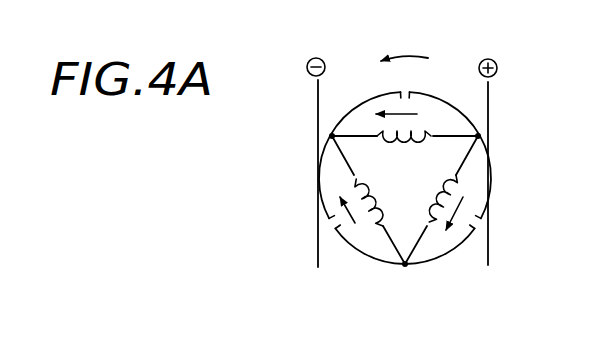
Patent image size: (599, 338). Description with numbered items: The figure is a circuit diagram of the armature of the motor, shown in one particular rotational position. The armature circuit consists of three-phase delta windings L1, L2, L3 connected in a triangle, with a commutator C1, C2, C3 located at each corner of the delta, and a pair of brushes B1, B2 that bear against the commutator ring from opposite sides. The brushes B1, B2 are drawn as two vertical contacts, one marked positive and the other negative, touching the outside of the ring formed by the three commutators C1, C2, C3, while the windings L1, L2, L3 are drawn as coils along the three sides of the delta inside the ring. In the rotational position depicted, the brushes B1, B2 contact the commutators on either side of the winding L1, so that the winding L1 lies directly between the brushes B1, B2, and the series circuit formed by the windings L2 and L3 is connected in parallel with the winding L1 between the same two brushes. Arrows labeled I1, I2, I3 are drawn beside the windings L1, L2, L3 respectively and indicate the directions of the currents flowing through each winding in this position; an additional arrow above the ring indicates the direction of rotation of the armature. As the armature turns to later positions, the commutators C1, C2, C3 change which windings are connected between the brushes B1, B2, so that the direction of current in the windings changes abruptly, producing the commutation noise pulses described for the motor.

The commutator C1 is at (445, 100).
The commutator C2 is at (329, 232).
The commutator C3 is at (453, 254).
The brush B1 is at (491, 239).
The brush B2 is at (324, 223).
The winding L1 is at (404, 151).
The winding L2 is at (374, 202).
The winding L3 is at (435, 198).
The coil current I1 is at (408, 115).
The coil current I2 is at (356, 225).
The coil current I3 is at (462, 200).